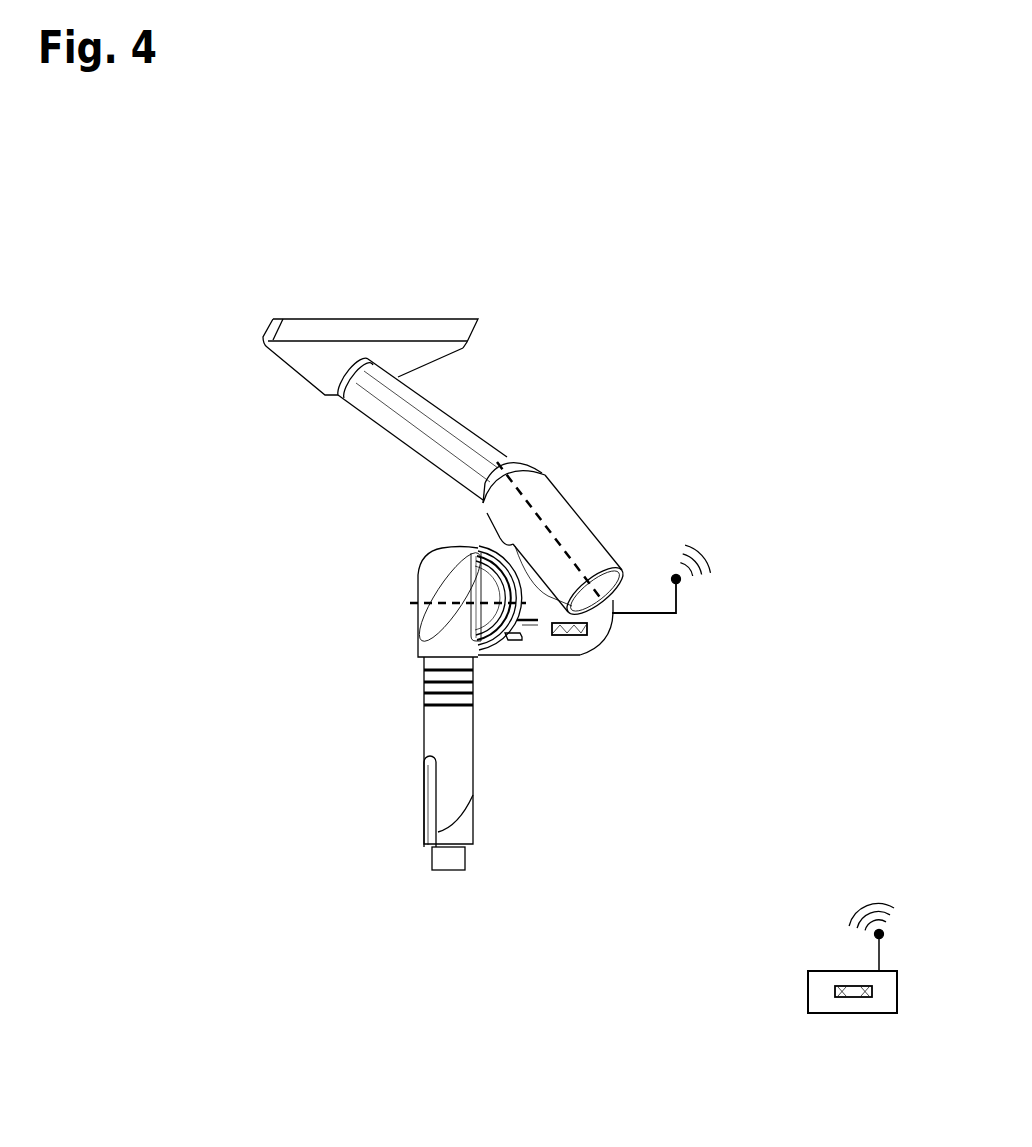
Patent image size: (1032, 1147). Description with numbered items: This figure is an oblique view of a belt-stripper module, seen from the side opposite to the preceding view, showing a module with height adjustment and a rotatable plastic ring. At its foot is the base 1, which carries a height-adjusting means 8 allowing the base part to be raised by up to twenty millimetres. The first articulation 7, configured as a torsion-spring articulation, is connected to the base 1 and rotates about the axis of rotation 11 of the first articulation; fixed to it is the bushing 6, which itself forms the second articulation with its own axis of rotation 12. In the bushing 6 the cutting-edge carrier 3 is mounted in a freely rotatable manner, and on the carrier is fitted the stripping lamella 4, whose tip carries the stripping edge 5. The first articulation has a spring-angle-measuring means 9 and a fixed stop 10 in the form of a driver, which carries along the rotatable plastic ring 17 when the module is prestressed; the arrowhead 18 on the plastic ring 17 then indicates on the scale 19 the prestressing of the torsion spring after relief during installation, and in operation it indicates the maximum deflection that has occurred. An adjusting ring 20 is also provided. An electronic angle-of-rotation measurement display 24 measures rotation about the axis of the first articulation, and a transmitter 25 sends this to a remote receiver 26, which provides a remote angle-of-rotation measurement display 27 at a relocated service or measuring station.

The base 1 is at (448, 797).
The cutting-edge carrier 3 is at (450, 440).
The stripping lamella 4 is at (457, 352).
The stripping edge 5 is at (452, 332).
The bushing 6 is at (555, 522).
The first articulation 7 is at (598, 625).
The height-adjusting means 8 is at (452, 678).
The spring-angle-measuring means 9 is at (493, 650).
The fixed stop 10 is at (520, 640).
The axis of rotation of the first articulation 11 is at (437, 603).
The axis of rotation of the second articulation 12 is at (523, 497).
The plastic ring 17 is at (467, 545).
The arrowhead 18 is at (523, 633).
The scale 19 is at (537, 624).
The adjusting ring 20 is at (424, 705).
The electronic angle of rotation 24 is at (577, 630).
The transmitter 25 is at (678, 598).
The receiver 26 is at (822, 997).
The remote angle of rotation measurement display 27 is at (853, 997).